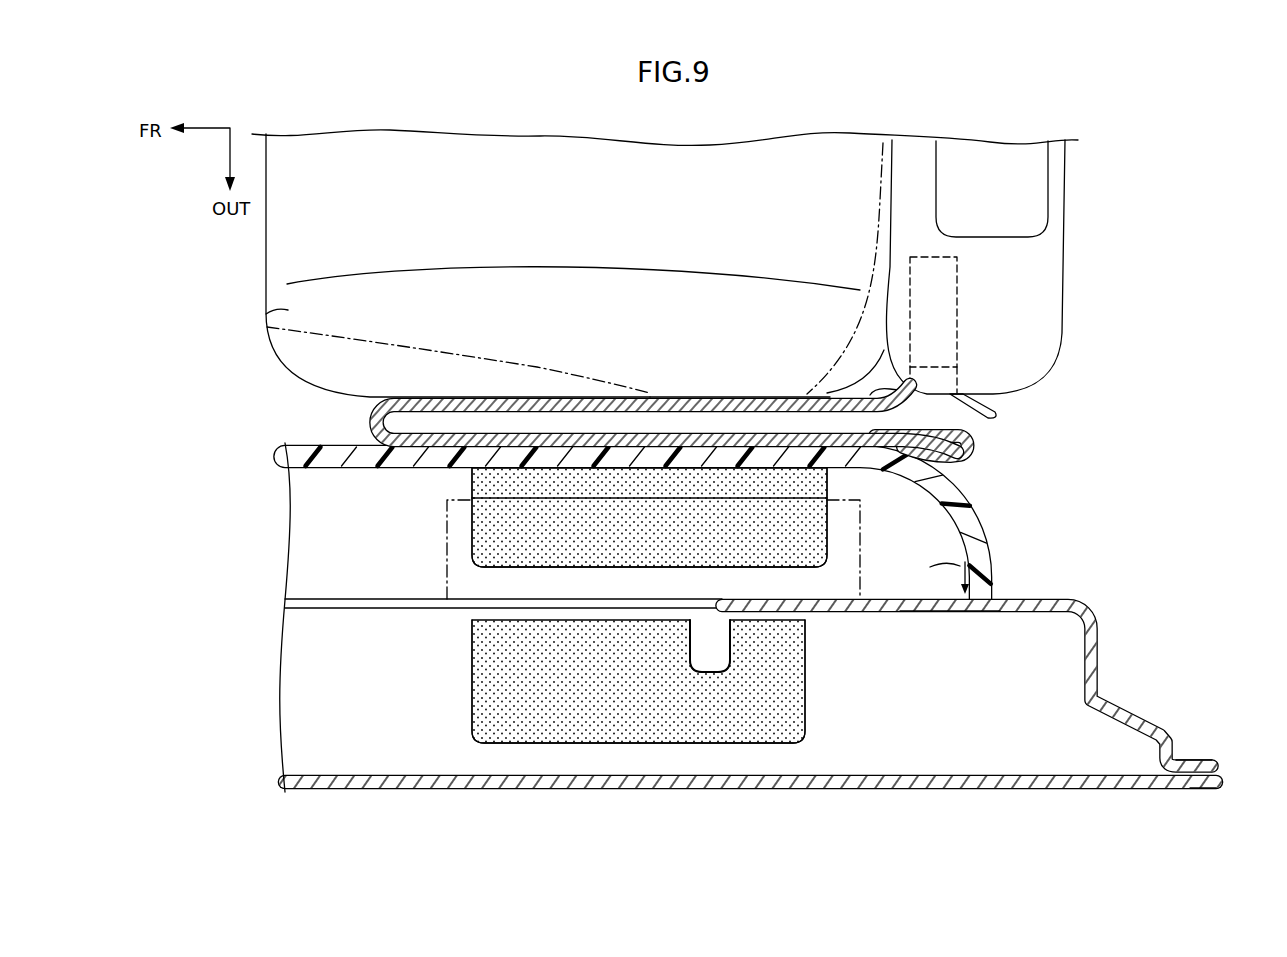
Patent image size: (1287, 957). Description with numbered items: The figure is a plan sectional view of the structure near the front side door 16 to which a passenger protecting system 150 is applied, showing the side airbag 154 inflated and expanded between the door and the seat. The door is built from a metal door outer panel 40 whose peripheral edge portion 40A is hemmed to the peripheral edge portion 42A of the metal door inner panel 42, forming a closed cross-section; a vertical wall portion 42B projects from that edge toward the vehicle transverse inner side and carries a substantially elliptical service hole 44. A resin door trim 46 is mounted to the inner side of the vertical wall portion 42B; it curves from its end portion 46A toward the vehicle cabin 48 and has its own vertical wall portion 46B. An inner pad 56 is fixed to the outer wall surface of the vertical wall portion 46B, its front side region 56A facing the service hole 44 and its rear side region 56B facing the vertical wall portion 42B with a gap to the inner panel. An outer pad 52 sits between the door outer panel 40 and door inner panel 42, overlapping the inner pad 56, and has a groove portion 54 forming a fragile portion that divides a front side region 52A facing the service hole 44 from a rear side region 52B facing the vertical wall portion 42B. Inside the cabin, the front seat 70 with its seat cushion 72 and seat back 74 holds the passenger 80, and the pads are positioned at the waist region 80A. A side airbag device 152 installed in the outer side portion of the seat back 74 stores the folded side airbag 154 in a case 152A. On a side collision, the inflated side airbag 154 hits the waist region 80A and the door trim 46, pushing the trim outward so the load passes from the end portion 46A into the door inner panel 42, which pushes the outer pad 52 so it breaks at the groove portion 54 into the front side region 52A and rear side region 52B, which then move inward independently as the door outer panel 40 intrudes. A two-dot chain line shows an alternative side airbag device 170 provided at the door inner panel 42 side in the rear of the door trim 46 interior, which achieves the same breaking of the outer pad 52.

The front side door 16 is at (680, 800).
The door outer panel 40 is at (862, 792).
The peripheral edge portion of the door outer panel 40A is at (1200, 789).
The door inner panel 42 is at (1098, 613).
The peripheral edge portion of the door inner panel 42A is at (1187, 759).
The vertical wall portion of the door inner panel 42B is at (931, 612).
The service hole 44 is at (717, 597).
The door trim 46 is at (980, 496).
The end portion of the door trim 46A is at (992, 597).
The vertical wall portion of the door trim 46B is at (983, 437).
The vehicle cabin 48 is at (1138, 320).
The outer pad 52 is at (466, 660).
The front side region of the outer pad 52A is at (500, 707).
The rear side region of the outer pad 52B is at (780, 710).
The groove portion 54 is at (716, 668).
The inner pad 56 is at (468, 520).
The front side region of the inner pad 56A is at (500, 540).
The rear side region of the inner pad 56B is at (788, 520).
The front seat 70 is at (262, 283).
The seat cushion 72 is at (262, 328).
The seat back 74 is at (1065, 257).
The passenger 80 is at (338, 342).
The waist region of the passenger 80A is at (709, 395).
The passenger protecting system 150 is at (1080, 509).
The side airbag device 152 is at (962, 358).
The case 152A is at (957, 308).
The side airbag 154 is at (603, 398).
The side airbag device 170 is at (447, 506).